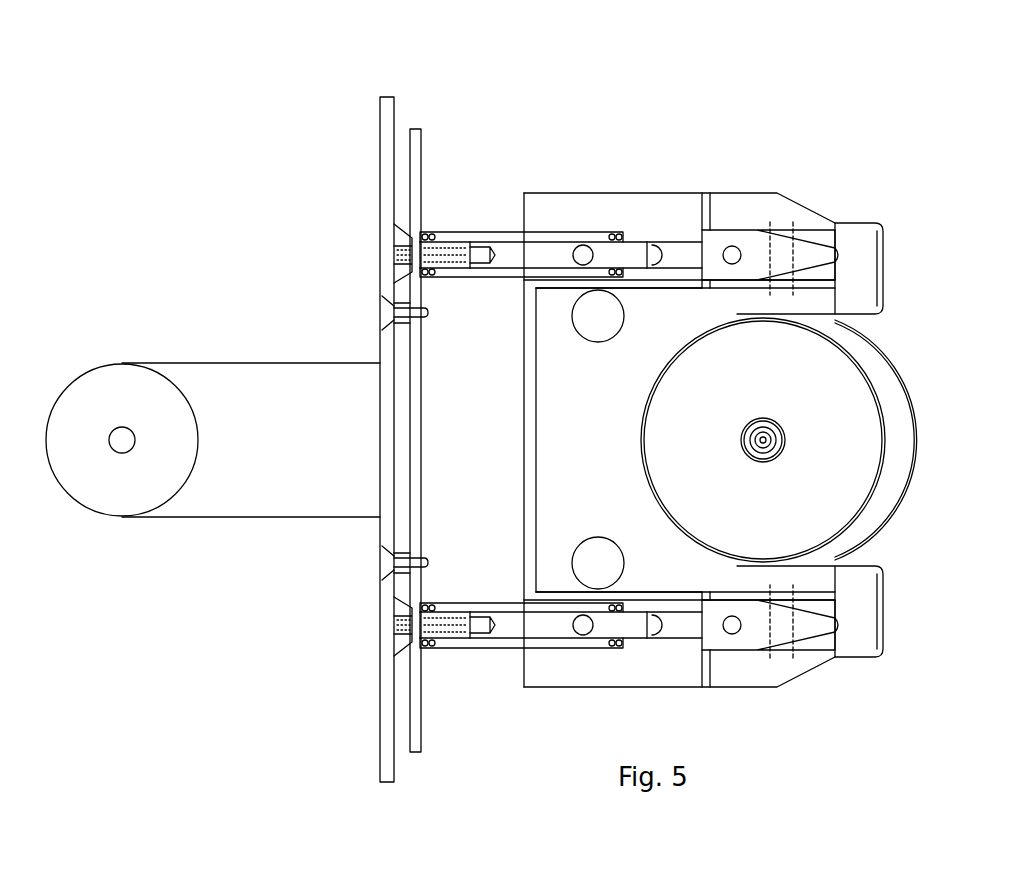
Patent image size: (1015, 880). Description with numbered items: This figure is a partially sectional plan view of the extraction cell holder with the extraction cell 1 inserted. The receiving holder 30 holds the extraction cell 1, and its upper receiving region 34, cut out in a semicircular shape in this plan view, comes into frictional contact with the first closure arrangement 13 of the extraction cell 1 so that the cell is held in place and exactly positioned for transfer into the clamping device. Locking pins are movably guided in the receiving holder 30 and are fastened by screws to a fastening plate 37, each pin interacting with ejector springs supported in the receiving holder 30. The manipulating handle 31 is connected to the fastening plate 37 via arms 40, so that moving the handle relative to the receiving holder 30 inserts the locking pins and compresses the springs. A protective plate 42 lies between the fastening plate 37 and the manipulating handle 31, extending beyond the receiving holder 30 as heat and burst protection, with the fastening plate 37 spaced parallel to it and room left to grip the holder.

The extraction cell 1 is at (932, 356).
The first closure arrangement 13 is at (840, 478).
The receiving holder 30 is at (627, 128).
The manipulating handle 31 is at (96, 502).
The upper receiving region 34 is at (677, 313).
The fastening plate 37 is at (419, 165).
The arms 40 is at (272, 403).
The protective plate 42 is at (386, 113).